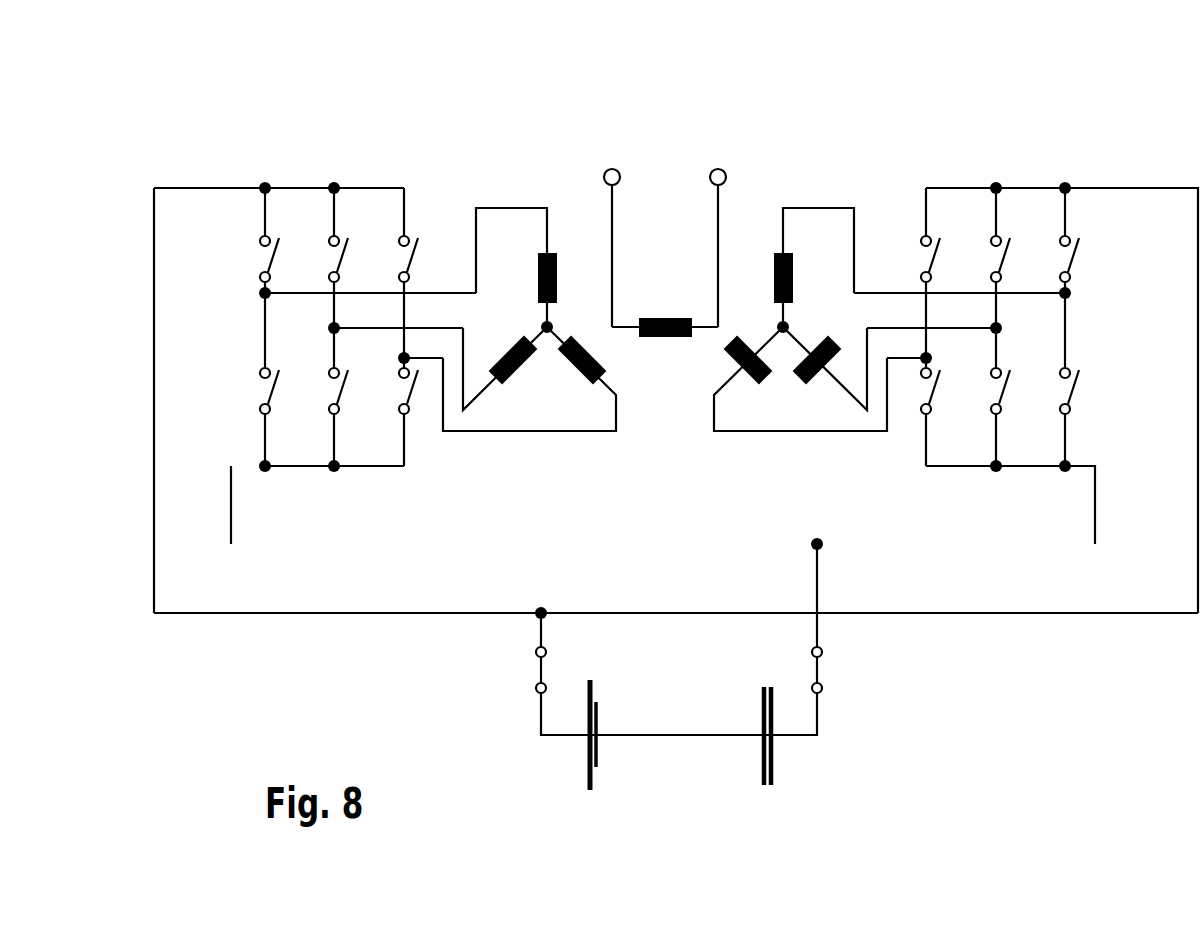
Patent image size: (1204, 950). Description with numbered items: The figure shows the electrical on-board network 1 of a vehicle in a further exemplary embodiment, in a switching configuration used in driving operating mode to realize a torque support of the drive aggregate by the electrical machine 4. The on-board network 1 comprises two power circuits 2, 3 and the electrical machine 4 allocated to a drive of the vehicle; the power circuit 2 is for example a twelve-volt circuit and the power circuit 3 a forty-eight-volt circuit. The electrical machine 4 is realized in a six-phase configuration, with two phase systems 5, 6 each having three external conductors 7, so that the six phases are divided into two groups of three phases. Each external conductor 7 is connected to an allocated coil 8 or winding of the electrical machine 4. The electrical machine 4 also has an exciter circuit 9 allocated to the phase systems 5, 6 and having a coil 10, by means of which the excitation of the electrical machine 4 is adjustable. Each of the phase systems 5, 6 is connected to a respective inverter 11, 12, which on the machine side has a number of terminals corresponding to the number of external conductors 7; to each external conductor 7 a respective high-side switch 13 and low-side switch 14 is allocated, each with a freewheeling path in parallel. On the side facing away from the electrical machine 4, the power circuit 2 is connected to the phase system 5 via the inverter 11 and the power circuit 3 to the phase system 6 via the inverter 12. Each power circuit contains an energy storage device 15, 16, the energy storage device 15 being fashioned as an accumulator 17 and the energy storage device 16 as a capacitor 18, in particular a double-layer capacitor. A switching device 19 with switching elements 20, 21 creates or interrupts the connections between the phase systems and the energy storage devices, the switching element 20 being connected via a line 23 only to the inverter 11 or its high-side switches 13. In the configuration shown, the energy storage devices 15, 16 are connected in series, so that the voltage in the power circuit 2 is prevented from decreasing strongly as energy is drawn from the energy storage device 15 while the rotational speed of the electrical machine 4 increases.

The on-board network 1 is at (814, 98).
The power circuit 2 is at (622, 771).
The power circuit 3 is at (840, 774).
The electrical machine 4 is at (630, 128).
The phase system 5 is at (461, 170).
The phase system 6 is at (771, 146).
The external conductor 7 is at (508, 206).
The coil 8 is at (553, 252).
The exciter circuit 9 is at (661, 156).
The coil 10 is at (660, 317).
The inverter 11 is at (334, 130).
The inverter 12 is at (1050, 161).
The high-side switch 13 is at (258, 260).
The low-side switch 14 is at (270, 389).
The energy storage device 15 is at (646, 766).
The energy storage device 16 is at (844, 743).
The accumulator 17 is at (604, 748).
The capacitor 18 is at (779, 744).
The switching device 19 is at (905, 694).
The switching element 20 is at (540, 672).
The switching element 21 is at (818, 668).
The line 23 is at (333, 614).